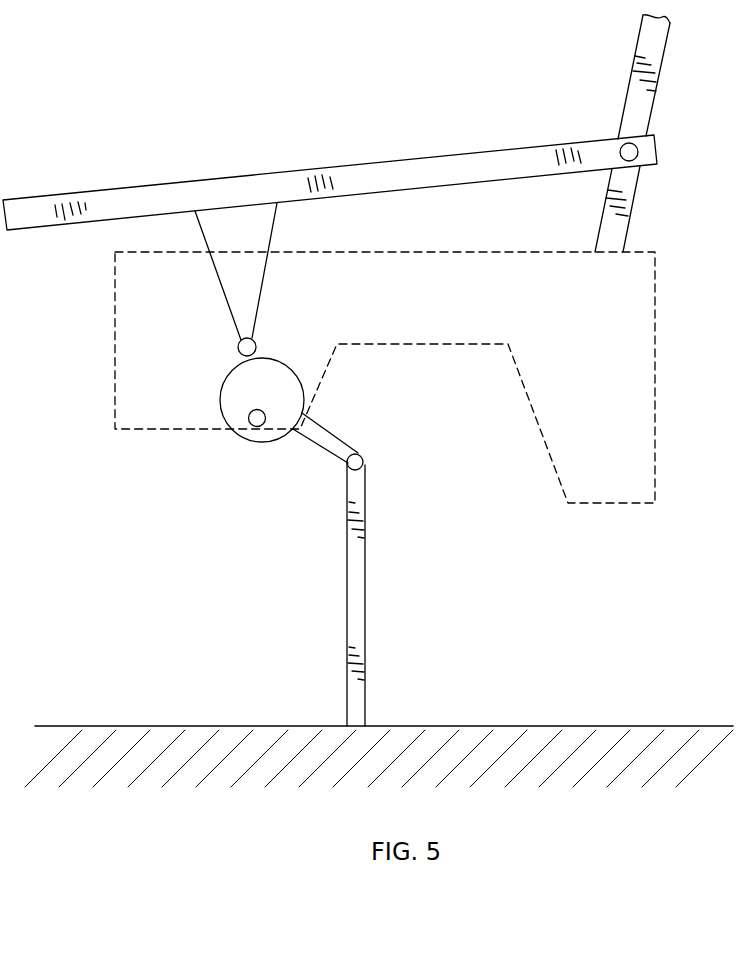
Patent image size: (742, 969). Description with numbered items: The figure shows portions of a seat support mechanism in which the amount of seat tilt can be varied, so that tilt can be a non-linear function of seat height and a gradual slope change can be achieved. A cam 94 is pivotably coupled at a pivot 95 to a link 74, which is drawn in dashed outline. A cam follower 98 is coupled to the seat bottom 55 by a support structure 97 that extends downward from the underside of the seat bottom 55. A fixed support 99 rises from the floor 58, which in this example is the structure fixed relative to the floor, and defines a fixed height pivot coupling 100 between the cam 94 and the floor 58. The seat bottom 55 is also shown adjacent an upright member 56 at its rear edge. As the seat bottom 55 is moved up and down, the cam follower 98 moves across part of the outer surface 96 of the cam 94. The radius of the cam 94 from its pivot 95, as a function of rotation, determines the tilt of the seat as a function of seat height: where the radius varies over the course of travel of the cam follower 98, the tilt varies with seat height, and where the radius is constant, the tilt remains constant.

The seat bottom 55 is at (371, 164).
The support post 56 is at (643, 113).
The support structure 97 is at (265, 228).
The cam follower 98 is at (247, 345).
The cam 94 is at (294, 398).
The pivot 95 is at (253, 422).
The outer surface 96 is at (219, 397).
The link 74 is at (655, 315).
The fixed height pivot coupling 100 is at (364, 458).
The fixed support 99 is at (358, 588).
The floor 58 is at (558, 726).